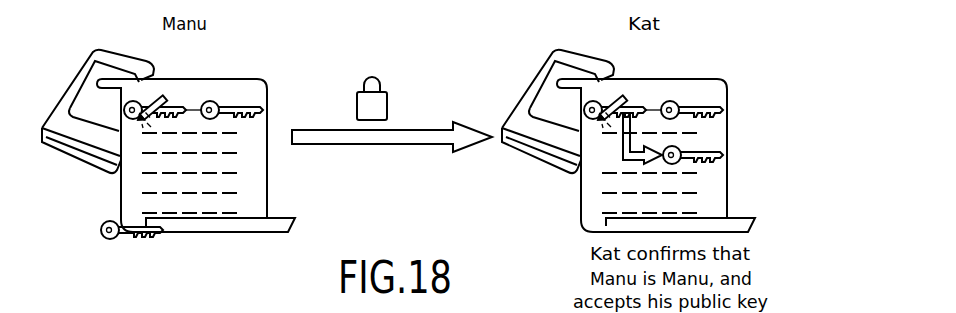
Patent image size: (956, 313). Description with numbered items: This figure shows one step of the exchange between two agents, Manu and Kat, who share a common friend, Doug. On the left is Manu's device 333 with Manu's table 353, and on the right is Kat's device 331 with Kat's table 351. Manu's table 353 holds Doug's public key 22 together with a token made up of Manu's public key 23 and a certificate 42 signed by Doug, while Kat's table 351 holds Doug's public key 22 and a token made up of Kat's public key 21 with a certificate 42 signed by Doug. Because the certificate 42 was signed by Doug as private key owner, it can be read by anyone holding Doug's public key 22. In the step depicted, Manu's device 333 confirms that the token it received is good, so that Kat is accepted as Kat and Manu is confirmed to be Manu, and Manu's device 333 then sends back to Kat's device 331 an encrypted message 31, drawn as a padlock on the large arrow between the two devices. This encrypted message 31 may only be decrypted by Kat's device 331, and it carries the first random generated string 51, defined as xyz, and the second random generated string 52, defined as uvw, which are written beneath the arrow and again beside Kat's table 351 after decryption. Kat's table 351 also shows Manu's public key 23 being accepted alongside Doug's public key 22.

The Kat's public key 21 is at (117, 244).
The Doug's public key 22 is at (236, 103).
The Manu's public key 23 is at (137, 100).
The encrypted message 31 is at (377, 110).
The certificate signed by Doug 42 is at (156, 100).
The first random generated string 51 is at (360, 175).
The second random generated string 52 is at (387, 175).
The Kat's device 331 is at (542, 100).
The Manu's device 333 is at (92, 97).
The Kat's table 351 is at (587, 185).
The Manu's table 353 is at (130, 189).